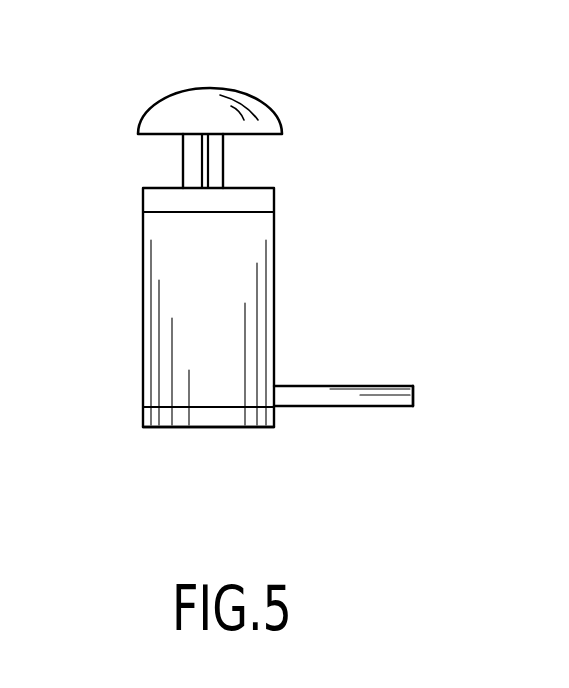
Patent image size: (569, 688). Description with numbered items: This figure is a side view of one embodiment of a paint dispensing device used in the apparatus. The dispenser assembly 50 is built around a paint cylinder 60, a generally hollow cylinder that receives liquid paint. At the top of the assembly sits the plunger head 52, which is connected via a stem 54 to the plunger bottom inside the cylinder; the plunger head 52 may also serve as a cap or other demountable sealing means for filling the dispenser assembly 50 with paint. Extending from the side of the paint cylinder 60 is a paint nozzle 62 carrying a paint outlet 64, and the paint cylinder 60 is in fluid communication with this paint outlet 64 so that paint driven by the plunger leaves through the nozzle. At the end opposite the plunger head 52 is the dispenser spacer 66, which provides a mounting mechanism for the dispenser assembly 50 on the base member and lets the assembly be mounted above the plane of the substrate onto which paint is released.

The dispenser assembly 50 is at (317, 270).
The plunger head 52 is at (254, 98).
The stem 54 is at (225, 166).
The paint cylinder 60 is at (152, 290).
The paint nozzle 62 is at (298, 384).
The paint outlet 64 is at (413, 392).
The dispenser spacer 66 is at (170, 428).